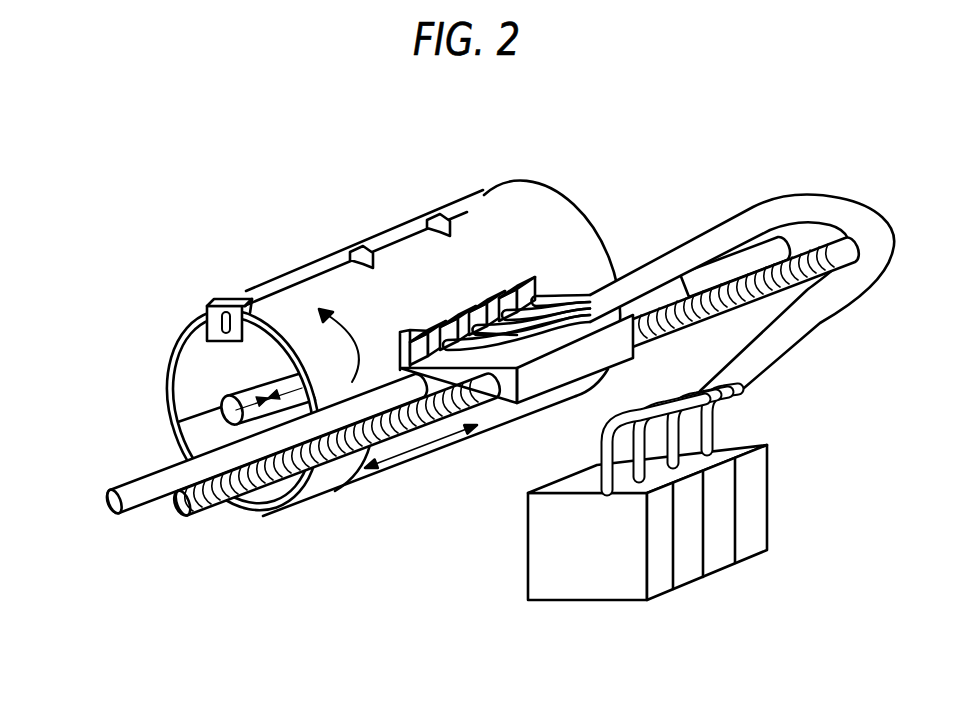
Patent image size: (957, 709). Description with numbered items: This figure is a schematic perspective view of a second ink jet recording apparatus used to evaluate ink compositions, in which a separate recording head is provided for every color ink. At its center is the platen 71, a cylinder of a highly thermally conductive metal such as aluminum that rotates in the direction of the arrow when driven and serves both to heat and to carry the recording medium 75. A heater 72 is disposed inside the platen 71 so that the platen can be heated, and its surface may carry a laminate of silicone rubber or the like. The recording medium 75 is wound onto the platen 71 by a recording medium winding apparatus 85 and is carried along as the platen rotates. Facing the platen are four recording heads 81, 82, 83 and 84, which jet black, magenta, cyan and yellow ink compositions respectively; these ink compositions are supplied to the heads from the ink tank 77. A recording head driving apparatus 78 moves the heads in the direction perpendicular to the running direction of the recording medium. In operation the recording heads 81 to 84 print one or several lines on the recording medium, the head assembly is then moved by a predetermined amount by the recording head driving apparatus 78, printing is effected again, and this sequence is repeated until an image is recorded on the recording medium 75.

The platen 71 is at (287, 316).
The heater 72 is at (217, 413).
The recording medium 75 is at (408, 258).
The ink tank 77 is at (660, 579).
The recording head driving apparatus 78 is at (223, 512).
The recording head 81 is at (432, 328).
The recording head 82 is at (479, 284).
The recording head 83 is at (498, 280).
The recording head 84 is at (560, 262).
The recording medium winding apparatus 85 is at (340, 258).